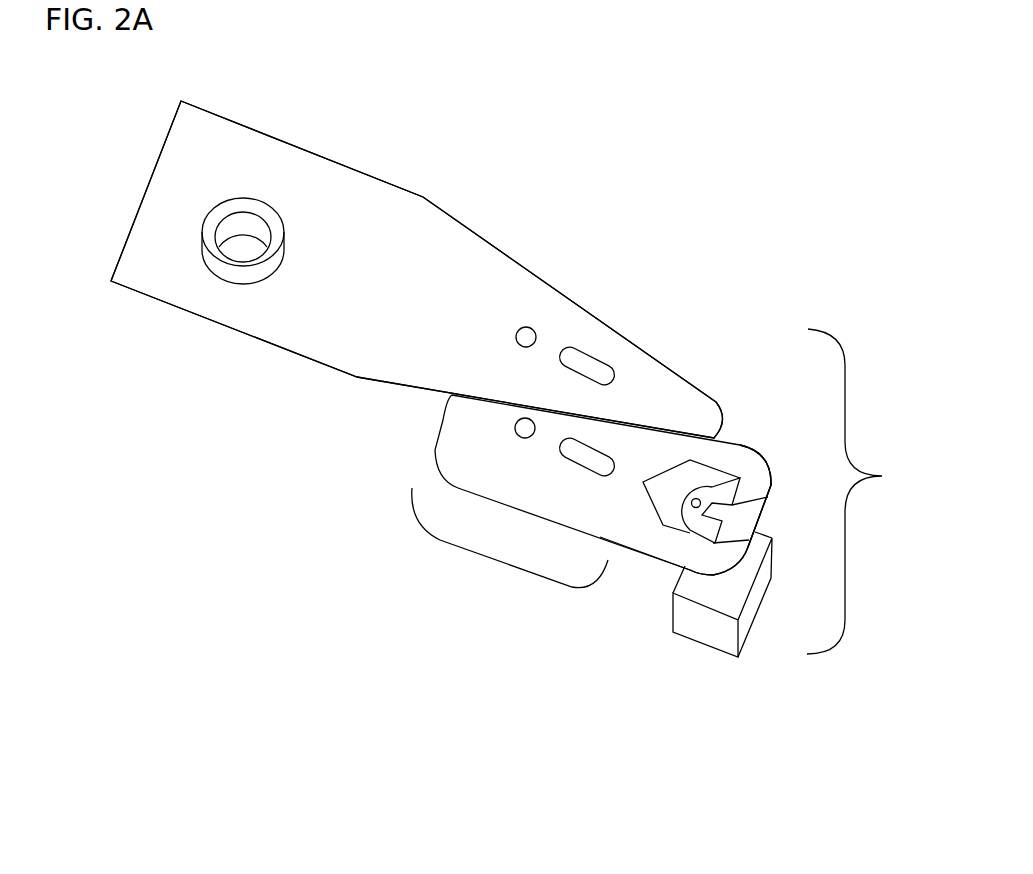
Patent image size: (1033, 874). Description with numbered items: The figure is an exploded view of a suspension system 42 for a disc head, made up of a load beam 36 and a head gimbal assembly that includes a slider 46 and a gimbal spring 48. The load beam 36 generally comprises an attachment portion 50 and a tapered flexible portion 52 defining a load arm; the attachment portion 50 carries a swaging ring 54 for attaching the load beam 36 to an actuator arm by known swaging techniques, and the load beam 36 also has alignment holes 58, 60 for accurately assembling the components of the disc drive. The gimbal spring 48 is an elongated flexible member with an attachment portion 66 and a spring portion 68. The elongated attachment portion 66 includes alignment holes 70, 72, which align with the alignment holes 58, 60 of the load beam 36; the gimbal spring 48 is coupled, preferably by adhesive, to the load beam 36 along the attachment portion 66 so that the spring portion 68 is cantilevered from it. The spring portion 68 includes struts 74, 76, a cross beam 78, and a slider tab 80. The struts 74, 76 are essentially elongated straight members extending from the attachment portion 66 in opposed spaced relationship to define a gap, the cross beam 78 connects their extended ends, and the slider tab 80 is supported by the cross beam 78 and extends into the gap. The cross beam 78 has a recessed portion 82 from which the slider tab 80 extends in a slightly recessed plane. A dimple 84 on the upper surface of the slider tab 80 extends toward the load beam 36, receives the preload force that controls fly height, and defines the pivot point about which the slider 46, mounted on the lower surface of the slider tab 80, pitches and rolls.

The load beam 36 is at (403, 178).
The suspension system 42 is at (818, 282).
The slider 46 is at (725, 661).
The gimbal spring 48 is at (418, 440).
The attachment portion 50 is at (314, 322).
The tapered flexible portion 52 is at (486, 342).
The swaging ring 54 is at (255, 210).
The alignment hole 58 is at (536, 332).
The alignment hole 60 is at (597, 358).
The attachment portion 66 is at (497, 560).
The spring portion 68 is at (751, 440).
The alignment hole 70 is at (521, 435).
The alignment hole 72 is at (572, 467).
The strut 74 is at (755, 460).
The strut 76 is at (652, 548).
The cross beam 78 is at (748, 510).
The slider tab 80 is at (693, 510).
The recessed portion 82 is at (750, 518).
The dimple 84 is at (700, 498).